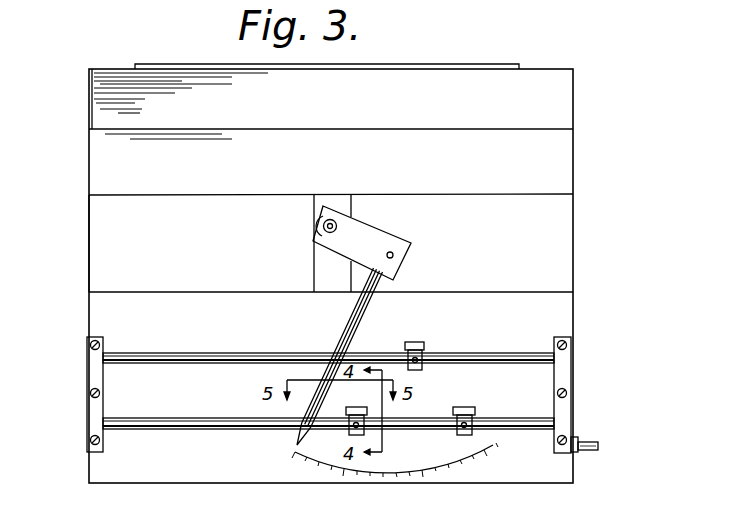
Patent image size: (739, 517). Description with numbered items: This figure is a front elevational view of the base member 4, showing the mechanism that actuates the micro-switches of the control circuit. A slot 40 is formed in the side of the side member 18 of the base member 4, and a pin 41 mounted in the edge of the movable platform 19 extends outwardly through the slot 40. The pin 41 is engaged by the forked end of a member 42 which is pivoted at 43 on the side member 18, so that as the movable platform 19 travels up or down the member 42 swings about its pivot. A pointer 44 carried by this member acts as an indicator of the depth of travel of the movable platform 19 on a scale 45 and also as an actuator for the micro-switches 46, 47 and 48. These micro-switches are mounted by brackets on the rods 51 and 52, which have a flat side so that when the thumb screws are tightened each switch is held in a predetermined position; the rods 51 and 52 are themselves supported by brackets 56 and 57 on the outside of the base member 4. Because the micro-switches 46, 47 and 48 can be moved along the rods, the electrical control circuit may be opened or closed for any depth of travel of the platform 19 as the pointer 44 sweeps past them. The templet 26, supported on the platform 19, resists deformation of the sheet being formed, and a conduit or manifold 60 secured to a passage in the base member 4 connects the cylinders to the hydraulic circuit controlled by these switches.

The base member 4 is at (584, 225).
The side member 18 is at (100, 240).
The movable platform 19 is at (322, 225).
The templet 26 is at (522, 63).
The slot 40 is at (323, 270).
The pin 41 is at (320, 231).
The member 42 is at (362, 232).
The pivot 43 is at (394, 255).
The pointer 44 is at (343, 329).
The scale 45 is at (461, 461).
The micro-switch 46 is at (362, 402).
The micro-switch 47 is at (432, 337).
The micro-switch 48 is at (474, 409).
The rod 51 is at (178, 348).
The rod 52 is at (180, 427).
The bracket 56 is at (562, 373).
The bracket 57 is at (88, 390).
The conduit or manifold 60 is at (597, 447).